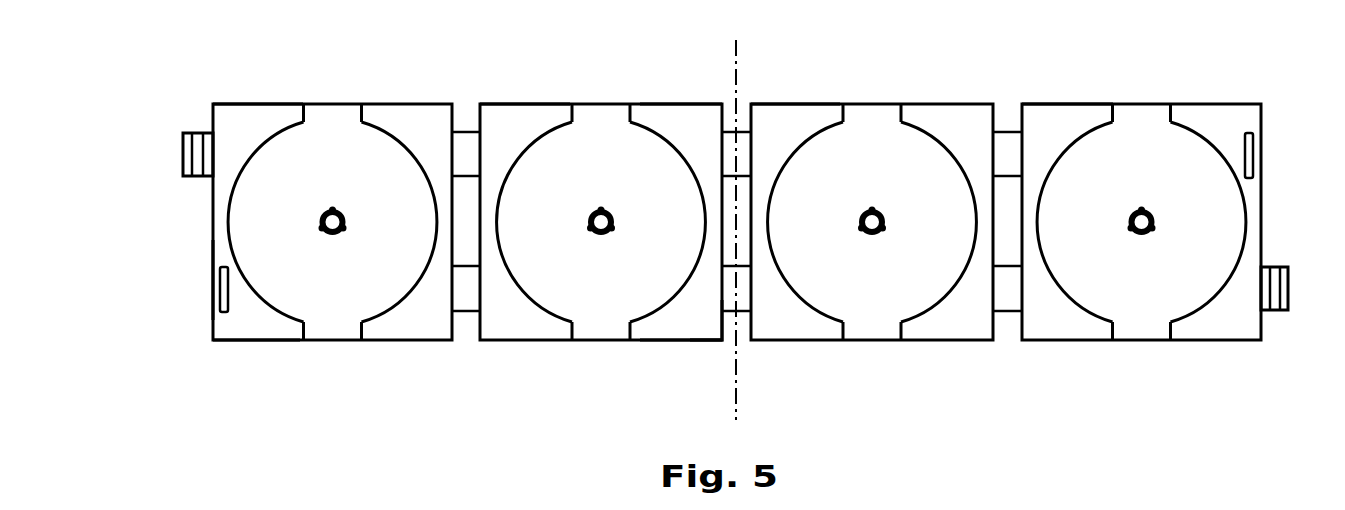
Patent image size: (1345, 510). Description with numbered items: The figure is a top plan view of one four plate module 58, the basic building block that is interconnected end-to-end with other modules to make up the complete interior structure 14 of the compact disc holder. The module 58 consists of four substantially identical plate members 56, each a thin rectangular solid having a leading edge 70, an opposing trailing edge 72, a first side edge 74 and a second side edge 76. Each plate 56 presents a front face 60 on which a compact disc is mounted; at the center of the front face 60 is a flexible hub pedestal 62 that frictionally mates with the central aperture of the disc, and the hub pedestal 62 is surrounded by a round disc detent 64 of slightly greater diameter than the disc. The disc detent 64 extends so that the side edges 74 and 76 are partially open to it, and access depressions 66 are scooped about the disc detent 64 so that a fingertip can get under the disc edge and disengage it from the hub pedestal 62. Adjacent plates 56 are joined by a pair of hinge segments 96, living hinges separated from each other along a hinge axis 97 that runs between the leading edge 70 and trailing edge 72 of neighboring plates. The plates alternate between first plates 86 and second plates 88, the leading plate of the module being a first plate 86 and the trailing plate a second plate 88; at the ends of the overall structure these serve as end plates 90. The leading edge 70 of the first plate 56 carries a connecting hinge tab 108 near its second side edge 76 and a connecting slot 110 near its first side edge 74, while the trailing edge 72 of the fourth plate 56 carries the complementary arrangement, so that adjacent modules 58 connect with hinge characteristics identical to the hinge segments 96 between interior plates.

The interior structure 14 is at (911, 58).
The plate member 56 is at (265, 342).
The four plate module 58 is at (537, 76).
The front face 60 is at (319, 182).
The hub pedestal 62 is at (338, 233).
The disc detent 64 is at (360, 150).
The access depression 66 is at (333, 333).
The leading edge 70 is at (212, 282).
The trailing edge 72 is at (722, 330).
The first side edge 74 is at (683, 103).
The second side edge 76 is at (228, 342).
The first plate 86 is at (237, 113).
The second plate 88 is at (549, 118).
The end plate 90 is at (690, 75).
The hinge segment 96 is at (467, 131).
The hinge axis 97 is at (736, 56).
The connecting hinge tab 108 is at (183, 158).
The connecting slot 110 is at (212, 308).